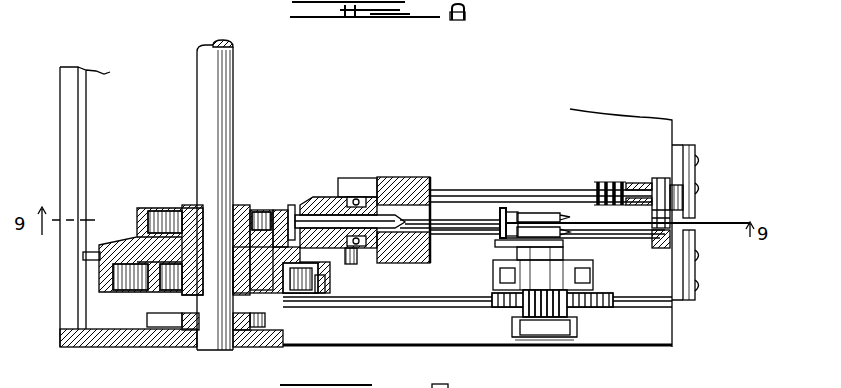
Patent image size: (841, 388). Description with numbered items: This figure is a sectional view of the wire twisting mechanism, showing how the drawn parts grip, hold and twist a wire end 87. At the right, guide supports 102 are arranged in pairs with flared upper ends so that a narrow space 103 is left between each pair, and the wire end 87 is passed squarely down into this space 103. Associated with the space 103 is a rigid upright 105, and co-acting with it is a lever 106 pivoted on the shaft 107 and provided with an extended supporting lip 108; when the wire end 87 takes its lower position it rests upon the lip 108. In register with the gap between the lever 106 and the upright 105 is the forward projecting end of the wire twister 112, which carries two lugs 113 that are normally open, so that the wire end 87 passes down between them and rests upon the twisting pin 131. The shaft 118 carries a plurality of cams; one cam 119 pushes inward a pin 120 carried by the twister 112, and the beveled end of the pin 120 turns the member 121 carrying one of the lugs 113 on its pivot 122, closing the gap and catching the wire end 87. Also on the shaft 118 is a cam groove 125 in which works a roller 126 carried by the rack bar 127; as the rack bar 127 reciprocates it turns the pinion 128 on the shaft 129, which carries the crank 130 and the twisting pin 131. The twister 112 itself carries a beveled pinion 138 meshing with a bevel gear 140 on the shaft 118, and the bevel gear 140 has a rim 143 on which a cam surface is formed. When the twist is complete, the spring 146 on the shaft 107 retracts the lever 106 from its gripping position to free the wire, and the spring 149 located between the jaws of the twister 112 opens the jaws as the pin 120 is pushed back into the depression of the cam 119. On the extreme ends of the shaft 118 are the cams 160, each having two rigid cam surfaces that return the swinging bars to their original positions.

The wire end 87 is at (613, 230).
The guide support 102 is at (692, 200).
The space 103 is at (697, 218).
The rigid upright 105 is at (665, 248).
The lever 106 is at (655, 220).
The shaft 107 is at (489, 190).
The supporting lip 108 is at (645, 235).
The wire twister 112 is at (465, 237).
The lug 113 is at (548, 227).
The shaft 118 is at (218, 115).
The cam 119 is at (280, 210).
The pin 120 is at (350, 205).
The member 121 is at (420, 185).
The pivot 122 is at (455, 218).
The cam groove 125 is at (318, 293).
The roller 126 is at (295, 287).
The rack bar 127 is at (410, 302).
The pinion 128 is at (532, 317).
The shaft 129 is at (552, 280).
The crank 130 is at (518, 241).
The twisting pin 131 is at (502, 232).
The beveled pinion 138 is at (310, 200).
The bevel gear 140 is at (110, 238).
The rim 143 is at (83, 258).
The spring 146 is at (612, 182).
The spring 149 is at (520, 213).
The cam 160 is at (192, 328).